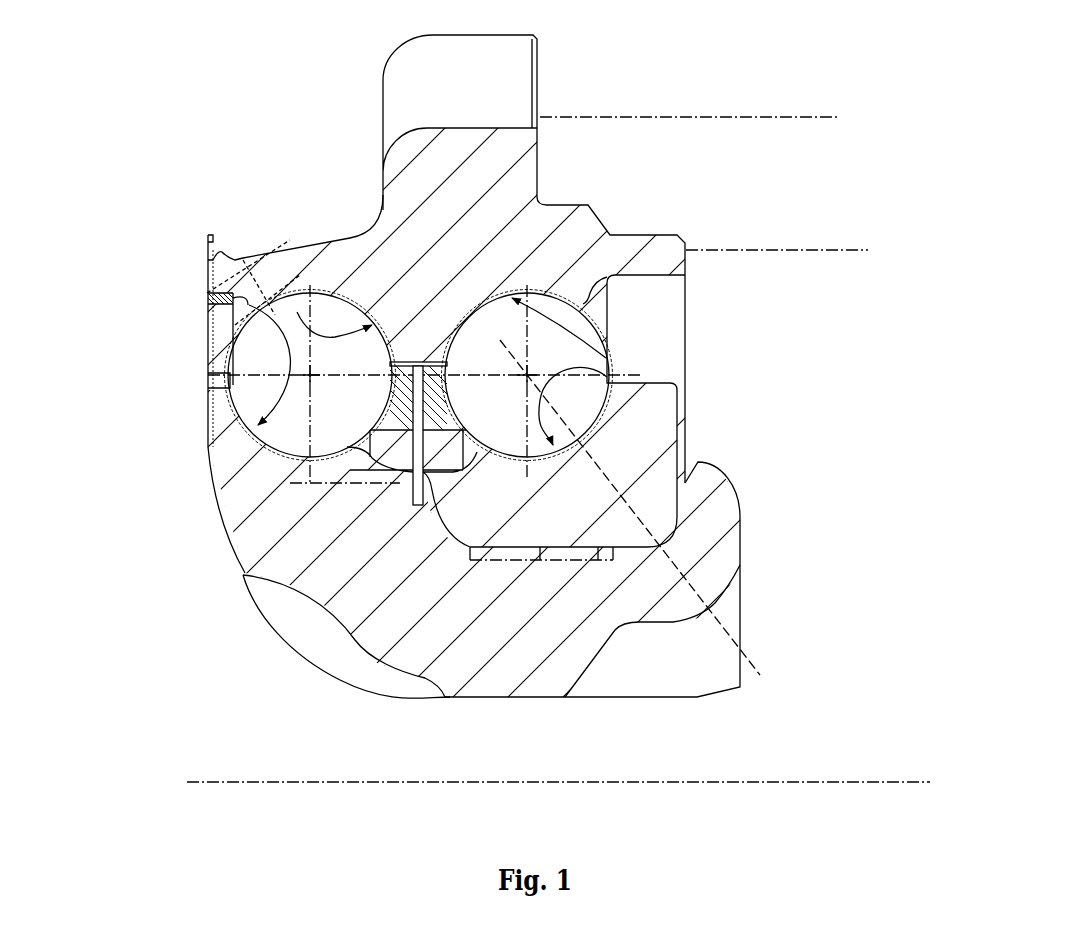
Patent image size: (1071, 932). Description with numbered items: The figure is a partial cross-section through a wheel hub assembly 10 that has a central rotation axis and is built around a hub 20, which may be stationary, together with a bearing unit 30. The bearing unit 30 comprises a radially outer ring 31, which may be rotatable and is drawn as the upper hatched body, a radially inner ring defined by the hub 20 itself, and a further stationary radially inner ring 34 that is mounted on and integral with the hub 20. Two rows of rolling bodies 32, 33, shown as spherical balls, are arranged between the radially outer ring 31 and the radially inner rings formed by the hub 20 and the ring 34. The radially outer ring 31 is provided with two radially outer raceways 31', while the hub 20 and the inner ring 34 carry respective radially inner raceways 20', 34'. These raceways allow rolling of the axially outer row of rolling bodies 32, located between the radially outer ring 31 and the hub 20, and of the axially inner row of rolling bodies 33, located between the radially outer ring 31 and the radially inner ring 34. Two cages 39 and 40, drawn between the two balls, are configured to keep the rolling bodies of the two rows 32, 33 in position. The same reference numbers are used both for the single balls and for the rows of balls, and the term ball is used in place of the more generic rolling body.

The wheel hub assembly 10 is at (140, 359).
The hub 20 is at (526, 449).
The radially inner raceway 20' is at (194, 331).
The bearing unit 30 is at (222, 210).
The radially outer ring 31 is at (425, 295).
The radially outer raceway 31' is at (479, 254).
The rolling body 32 is at (263, 373).
The rolling body 33 is at (607, 347).
The radially inner ring 34 is at (524, 477).
The radially inner raceway 34' is at (663, 389).
The cage 39 is at (430, 430).
The cage 40 is at (392, 405).